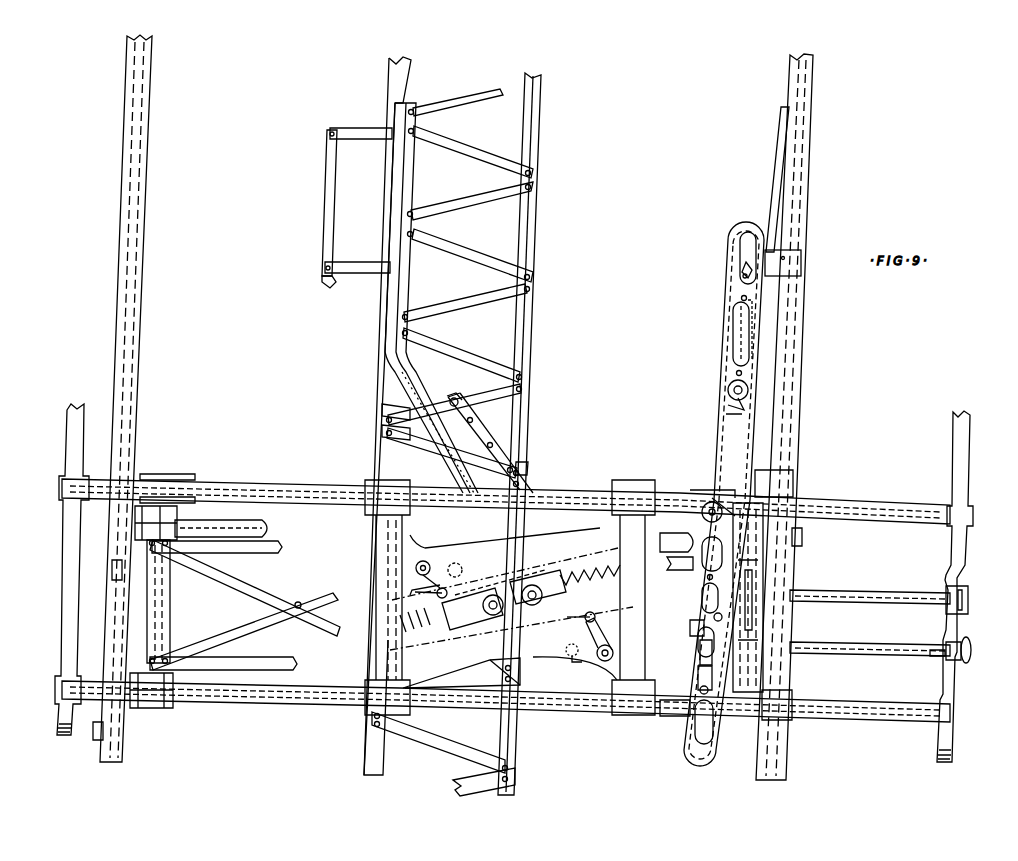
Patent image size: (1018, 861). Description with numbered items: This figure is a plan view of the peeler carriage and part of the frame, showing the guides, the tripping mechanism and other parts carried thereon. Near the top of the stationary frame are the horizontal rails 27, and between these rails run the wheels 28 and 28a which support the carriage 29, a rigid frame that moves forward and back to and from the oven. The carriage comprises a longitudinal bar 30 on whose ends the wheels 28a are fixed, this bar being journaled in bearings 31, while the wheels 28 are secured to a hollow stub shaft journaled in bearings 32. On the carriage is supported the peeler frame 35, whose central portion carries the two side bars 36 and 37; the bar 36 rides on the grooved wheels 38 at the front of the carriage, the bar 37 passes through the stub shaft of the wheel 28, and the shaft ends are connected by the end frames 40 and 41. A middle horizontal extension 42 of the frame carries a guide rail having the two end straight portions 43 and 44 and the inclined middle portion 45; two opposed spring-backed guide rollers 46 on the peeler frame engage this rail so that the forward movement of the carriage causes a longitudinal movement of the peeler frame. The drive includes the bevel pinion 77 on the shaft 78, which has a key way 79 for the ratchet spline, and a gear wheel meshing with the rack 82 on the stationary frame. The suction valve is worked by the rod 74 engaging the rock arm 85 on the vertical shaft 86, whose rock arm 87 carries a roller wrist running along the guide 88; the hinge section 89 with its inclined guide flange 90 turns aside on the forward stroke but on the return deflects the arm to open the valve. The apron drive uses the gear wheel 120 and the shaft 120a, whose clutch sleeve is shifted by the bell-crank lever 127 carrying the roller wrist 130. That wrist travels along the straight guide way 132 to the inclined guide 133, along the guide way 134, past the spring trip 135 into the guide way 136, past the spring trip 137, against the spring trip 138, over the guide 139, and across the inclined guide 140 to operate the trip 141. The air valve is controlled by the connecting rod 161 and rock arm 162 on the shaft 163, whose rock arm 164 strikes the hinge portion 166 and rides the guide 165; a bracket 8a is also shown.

The bracket 8a is at (112, 566).
The horizontal rails 27 is at (130, 412).
The wheels 28 is at (97, 722).
The wheels 28a is at (802, 540).
The carriage 29 is at (168, 613).
The longitudinal bar 30 is at (272, 532).
The bearings 31 is at (178, 523).
The bearings 32 is at (163, 704).
The peeler frame 35 is at (392, 552).
The side bar 36 is at (314, 488).
The side bar 37 is at (314, 688).
The grooved wheels 38 is at (180, 478).
The end frame 40 is at (66, 600).
The end frame 41 is at (952, 466).
The middle horizontal extension 42 is at (535, 338).
The end straight portion of guide rail 43 is at (514, 578).
The end straight portion of guide rail 44 is at (408, 176).
The inclined middle portion 45 is at (458, 462).
The guide rollers 46 is at (520, 620).
The rod 74 is at (568, 620).
The bevel pinion 77 is at (972, 650).
The shaft 78 is at (906, 656).
The key way 79 is at (846, 646).
The rack 82 is at (779, 170).
The rock arm 85 is at (598, 640).
The vertical shaft 86 is at (700, 658).
The rock arm 87 is at (584, 660).
The guide 88 is at (535, 470).
The hinge section 89 is at (470, 396).
The inclined guide flange 90 is at (454, 397).
The gear wheel 120 is at (968, 600).
The shaft 120a is at (876, 598).
The lever 127 is at (690, 628).
The roller wrist 130 is at (718, 738).
The straight guide way 132 is at (715, 442).
The inclined guide 133 is at (742, 412).
The guide way 134 is at (750, 344).
The spring trip 135 is at (744, 262).
The guide way 136 is at (732, 320).
The spring trip 137 is at (728, 390).
The spring trip 138 is at (704, 499).
The guide 139 is at (680, 572).
The inclined guide 140 is at (664, 716).
The trip 141 is at (698, 680).
The connecting rod 161 is at (400, 582).
The rock arm 162 is at (445, 588).
The shaft 163 is at (428, 560).
The rock arm 164 is at (464, 570).
The guide 165 is at (326, 222).
The hinge portion 166 is at (332, 288).